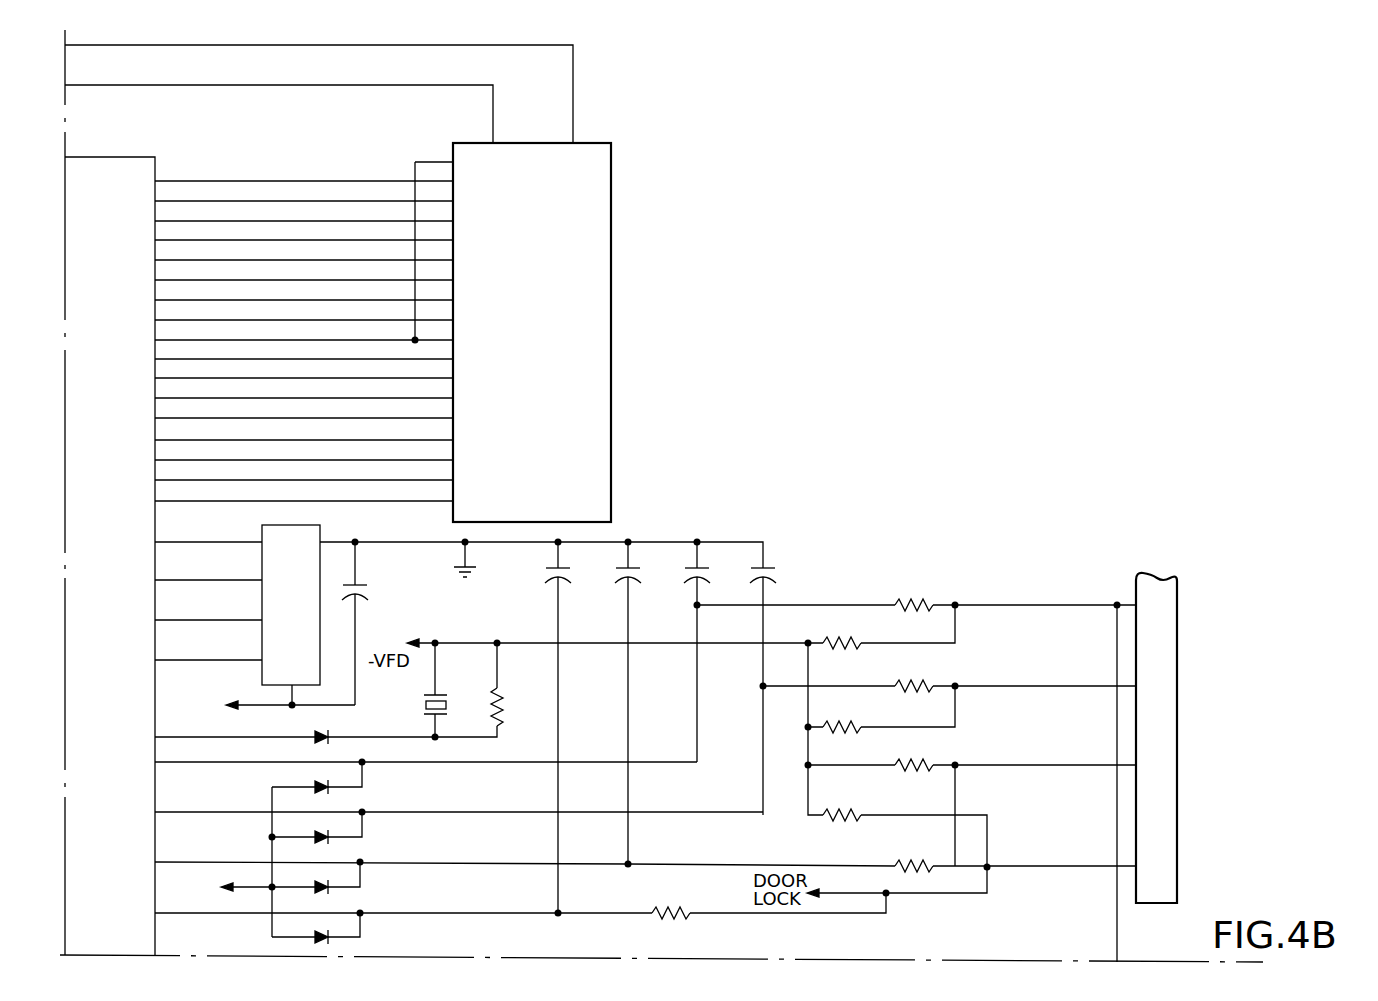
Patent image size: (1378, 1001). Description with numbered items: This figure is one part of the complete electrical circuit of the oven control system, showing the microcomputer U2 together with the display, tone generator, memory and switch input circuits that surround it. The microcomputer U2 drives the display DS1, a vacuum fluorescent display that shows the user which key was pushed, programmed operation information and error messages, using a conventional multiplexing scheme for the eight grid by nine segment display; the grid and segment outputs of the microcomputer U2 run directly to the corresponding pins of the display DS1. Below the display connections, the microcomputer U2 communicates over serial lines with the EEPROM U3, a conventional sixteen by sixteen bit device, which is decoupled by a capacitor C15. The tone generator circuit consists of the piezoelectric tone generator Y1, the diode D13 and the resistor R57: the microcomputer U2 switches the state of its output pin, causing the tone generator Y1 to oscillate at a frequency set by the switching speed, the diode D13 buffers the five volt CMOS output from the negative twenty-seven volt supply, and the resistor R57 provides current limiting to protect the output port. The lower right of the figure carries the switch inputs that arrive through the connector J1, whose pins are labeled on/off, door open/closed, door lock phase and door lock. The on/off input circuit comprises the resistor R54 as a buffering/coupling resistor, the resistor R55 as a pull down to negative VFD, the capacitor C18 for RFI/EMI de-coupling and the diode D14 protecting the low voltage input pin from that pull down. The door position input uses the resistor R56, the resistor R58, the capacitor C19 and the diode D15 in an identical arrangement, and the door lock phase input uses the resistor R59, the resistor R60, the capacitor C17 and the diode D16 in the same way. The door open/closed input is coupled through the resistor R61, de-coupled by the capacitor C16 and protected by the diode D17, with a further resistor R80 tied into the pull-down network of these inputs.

The microcomputer U2 is at (259, 543).
The EEPROM U3 is at (261, 608).
The display DS1 is at (535, 320).
The connector J1 is at (1255, 725).
The tone generator Y1 is at (449, 690).
The capacitor C15 .047 C15 is at (377, 623).
The capacitor C16 is at (540, 727).
The capacitor C17 is at (610, 703).
The capacitor C18 is at (677, 652).
The capacitor C19 is at (785, 685).
The resistor R54 is at (916, 605).
The resistor R55 is at (880, 638).
The resistor R56 is at (949, 686).
The resistor R57 is at (492, 690).
The resistor R58 is at (880, 720).
The resistor R59 is at (971, 767).
The resistor R60 is at (1014, 828).
The resistor R61 is at (675, 914).
The resistor R80 22K R80 is at (897, 768).
The diode D13 is at (295, 727).
The diode D14 is at (319, 777).
The diode D15 is at (317, 827).
The diode D16 is at (266, 878).
The diode D17 is at (318, 927).